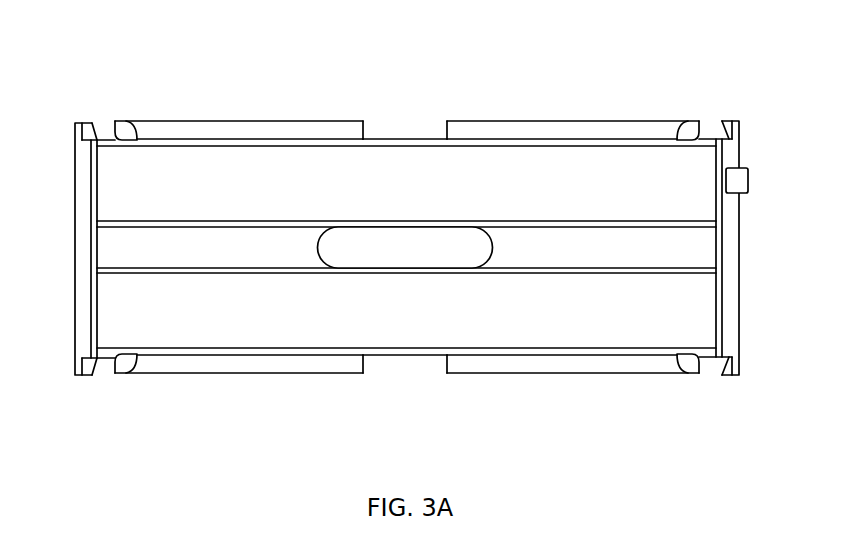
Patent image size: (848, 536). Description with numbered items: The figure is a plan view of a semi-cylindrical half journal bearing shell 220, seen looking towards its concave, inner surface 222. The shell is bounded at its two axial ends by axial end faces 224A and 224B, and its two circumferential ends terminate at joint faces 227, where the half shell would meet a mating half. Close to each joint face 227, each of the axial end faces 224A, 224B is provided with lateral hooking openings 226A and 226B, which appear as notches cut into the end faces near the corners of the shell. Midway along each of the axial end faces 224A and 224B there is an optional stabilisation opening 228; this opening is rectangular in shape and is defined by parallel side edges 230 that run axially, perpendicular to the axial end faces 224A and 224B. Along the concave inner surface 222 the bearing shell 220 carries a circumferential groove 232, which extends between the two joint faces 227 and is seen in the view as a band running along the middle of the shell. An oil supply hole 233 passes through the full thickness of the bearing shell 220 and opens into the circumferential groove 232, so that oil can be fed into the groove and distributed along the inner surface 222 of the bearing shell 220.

The semi-cylindrical half journal bearing shell 220 is at (618, 82).
The concave inner surface 222 is at (508, 197).
The axial end face 224A is at (208, 120).
The axial end face 224B is at (532, 373).
The lateral hooking opening 226A is at (105, 130).
The lateral hooking opening 226B is at (708, 124).
The joint face 227 is at (84, 338).
The stabilisation opening 228 is at (400, 125).
The parallel side edge 230 is at (363, 121).
The circumferential groove 232 is at (718, 238).
The oil supply hole 233 is at (350, 235).